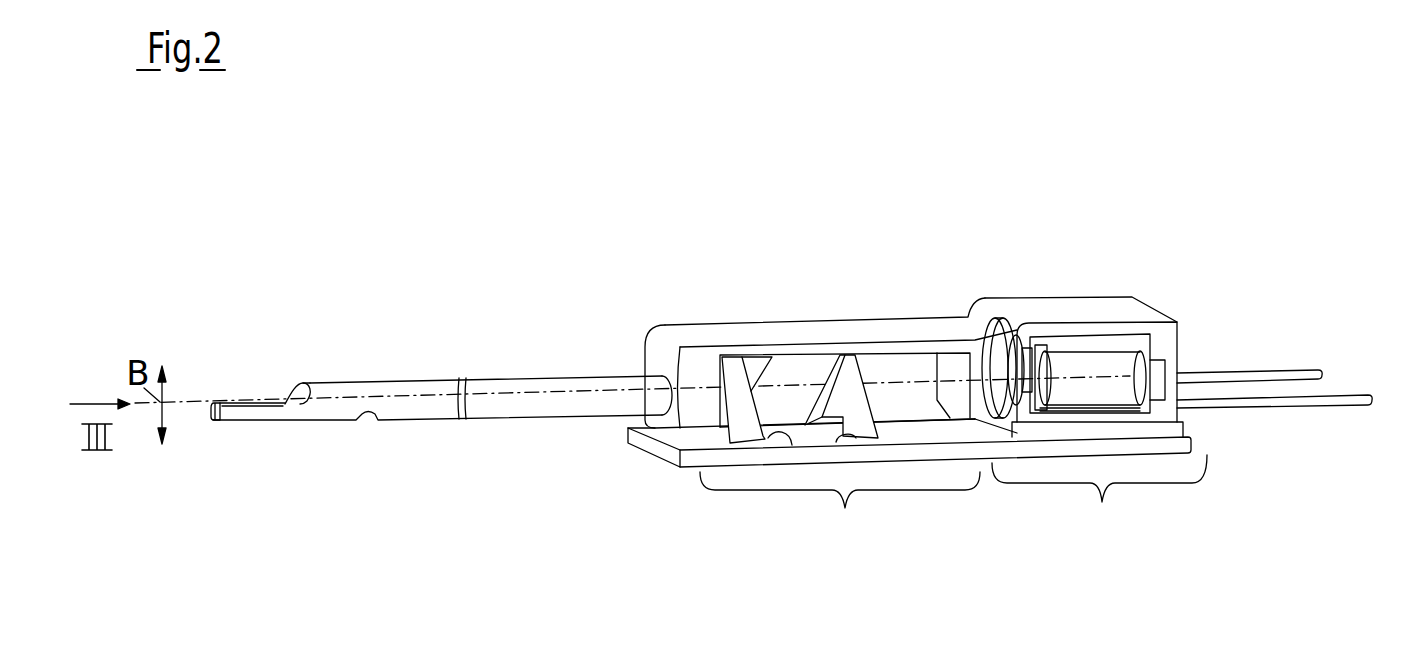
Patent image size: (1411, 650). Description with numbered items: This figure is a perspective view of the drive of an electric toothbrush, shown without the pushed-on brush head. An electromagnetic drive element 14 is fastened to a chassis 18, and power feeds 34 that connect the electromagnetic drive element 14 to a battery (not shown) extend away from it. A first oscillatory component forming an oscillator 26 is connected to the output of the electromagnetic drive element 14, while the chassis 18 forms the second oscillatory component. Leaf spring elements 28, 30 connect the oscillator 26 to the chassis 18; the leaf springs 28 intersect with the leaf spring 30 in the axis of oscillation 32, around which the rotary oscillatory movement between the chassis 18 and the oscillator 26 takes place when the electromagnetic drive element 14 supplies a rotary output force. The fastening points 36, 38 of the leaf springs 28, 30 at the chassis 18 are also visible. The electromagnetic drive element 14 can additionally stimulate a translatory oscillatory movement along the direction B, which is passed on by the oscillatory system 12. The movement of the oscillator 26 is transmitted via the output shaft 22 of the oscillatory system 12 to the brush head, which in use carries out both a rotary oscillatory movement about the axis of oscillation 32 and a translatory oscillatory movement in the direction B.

The oscillatory system 12 is at (840, 511).
The electromagnetic drive element 14 is at (1094, 421).
The chassis 18 is at (667, 453).
The output shaft 22 is at (553, 405).
The oscillator 26 is at (831, 323).
The leaf spring elements 28 is at (742, 432).
The leaf spring element 30 is at (788, 372).
The axis of oscillation 32 is at (177, 402).
The power feeds 34 is at (1252, 372).
The fastening point 36 is at (795, 440).
The fastening point 38 is at (802, 410).